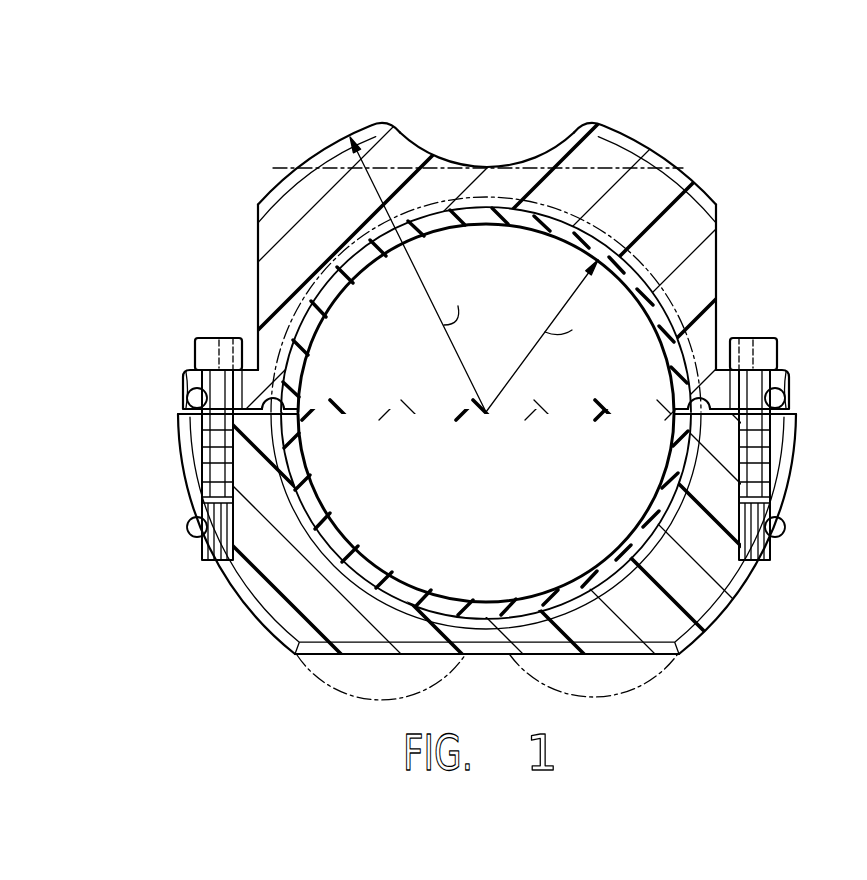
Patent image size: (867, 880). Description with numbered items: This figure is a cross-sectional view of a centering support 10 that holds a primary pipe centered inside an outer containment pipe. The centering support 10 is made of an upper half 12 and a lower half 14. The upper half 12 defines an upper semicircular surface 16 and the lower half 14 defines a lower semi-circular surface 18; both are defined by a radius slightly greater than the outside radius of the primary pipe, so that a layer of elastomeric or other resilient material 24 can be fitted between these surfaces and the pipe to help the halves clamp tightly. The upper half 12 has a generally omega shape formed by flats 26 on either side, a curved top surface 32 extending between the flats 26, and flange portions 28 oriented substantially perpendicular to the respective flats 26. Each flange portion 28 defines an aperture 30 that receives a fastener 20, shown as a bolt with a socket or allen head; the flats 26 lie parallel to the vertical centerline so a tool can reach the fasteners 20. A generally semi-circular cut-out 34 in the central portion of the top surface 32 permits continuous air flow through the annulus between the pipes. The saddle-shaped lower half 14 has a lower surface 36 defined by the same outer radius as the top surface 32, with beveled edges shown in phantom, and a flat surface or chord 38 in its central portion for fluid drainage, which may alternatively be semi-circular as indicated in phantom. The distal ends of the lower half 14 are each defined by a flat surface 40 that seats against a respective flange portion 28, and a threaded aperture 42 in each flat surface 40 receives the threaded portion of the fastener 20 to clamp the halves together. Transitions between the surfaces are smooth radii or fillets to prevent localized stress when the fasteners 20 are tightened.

The centering support 10 is at (672, 121).
The upper half 12 is at (612, 150).
The lower half 14 is at (703, 590).
The upper semicircular surface 16 is at (376, 262).
The lower semi-circular surface 18 is at (390, 577).
The fasteners 20 is at (226, 337).
The elastomeric material 24 is at (521, 222).
The flats 26 is at (258, 270).
The flange portions 28 is at (183, 383).
The aperture 30 is at (192, 405).
The curved top surface 32 is at (277, 190).
The semi-circular cut-out 34 is at (415, 142).
The lower surface 36 is at (258, 625).
The flat surface 38 is at (640, 657).
The flat surface 40 is at (285, 403).
The threaded aperture 42 is at (204, 538).